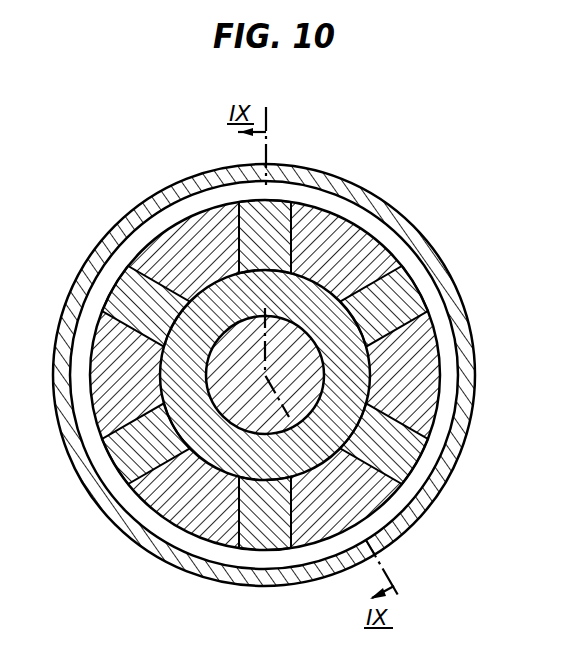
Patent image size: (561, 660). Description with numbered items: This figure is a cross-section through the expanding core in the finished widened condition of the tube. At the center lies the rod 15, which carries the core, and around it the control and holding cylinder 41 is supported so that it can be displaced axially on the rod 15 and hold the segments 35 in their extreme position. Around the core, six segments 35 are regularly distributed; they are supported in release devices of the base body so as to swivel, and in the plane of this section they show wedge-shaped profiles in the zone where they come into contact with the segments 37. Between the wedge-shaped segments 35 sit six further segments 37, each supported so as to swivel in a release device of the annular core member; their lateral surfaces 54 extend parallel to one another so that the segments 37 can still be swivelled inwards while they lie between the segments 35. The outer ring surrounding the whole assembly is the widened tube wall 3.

The outer housing 3 is at (460, 302).
The rod 15 is at (318, 375).
The segments 35 is at (363, 238).
The segments 37 is at (288, 210).
The control and holding cylinder 41 is at (207, 486).
The lateral surfaces 54 is at (117, 452).